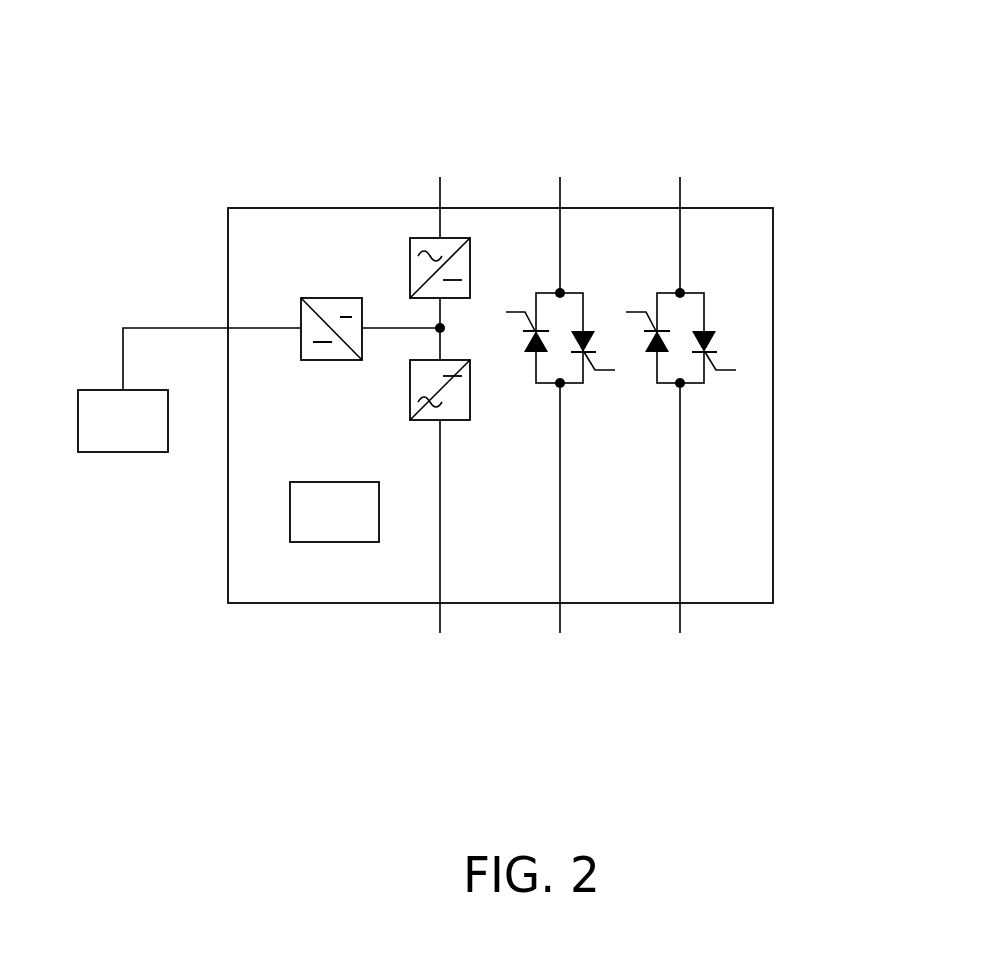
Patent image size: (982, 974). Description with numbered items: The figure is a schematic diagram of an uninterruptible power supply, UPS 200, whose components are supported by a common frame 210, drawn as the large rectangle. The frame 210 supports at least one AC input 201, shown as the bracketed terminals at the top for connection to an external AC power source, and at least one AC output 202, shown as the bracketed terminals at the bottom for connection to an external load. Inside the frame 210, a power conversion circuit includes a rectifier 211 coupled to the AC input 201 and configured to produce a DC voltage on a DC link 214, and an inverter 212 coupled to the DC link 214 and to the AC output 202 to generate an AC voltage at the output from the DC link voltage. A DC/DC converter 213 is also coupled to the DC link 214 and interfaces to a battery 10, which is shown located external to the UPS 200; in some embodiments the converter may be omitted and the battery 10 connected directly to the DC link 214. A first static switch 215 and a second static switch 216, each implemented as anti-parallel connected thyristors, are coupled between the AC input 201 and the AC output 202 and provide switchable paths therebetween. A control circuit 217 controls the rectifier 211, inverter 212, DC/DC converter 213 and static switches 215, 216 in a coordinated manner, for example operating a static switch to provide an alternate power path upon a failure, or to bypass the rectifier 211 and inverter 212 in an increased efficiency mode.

The uninterruptible power supply (UPS) 200 is at (288, 87).
The battery 10 is at (78, 422).
The AC input 201 is at (705, 153).
The AC output 202 is at (705, 638).
The frame 210 is at (773, 404).
The rectifier 211 is at (410, 268).
The inverter 212 is at (410, 391).
The DC/DC converter 213 is at (331, 360).
The DC link 214 is at (440, 310).
The first static switch 215 is at (548, 420).
The second static switch 216 is at (670, 408).
The control circuit 217 is at (335, 542).